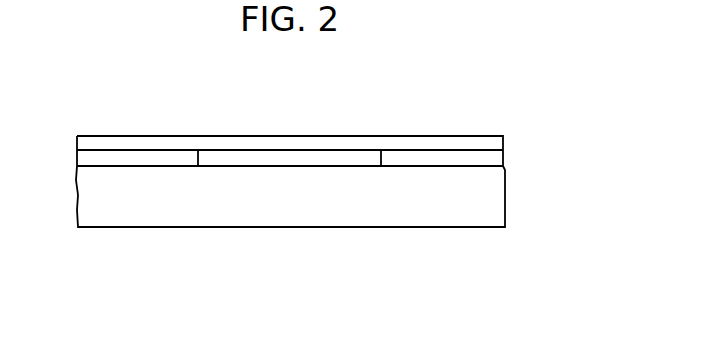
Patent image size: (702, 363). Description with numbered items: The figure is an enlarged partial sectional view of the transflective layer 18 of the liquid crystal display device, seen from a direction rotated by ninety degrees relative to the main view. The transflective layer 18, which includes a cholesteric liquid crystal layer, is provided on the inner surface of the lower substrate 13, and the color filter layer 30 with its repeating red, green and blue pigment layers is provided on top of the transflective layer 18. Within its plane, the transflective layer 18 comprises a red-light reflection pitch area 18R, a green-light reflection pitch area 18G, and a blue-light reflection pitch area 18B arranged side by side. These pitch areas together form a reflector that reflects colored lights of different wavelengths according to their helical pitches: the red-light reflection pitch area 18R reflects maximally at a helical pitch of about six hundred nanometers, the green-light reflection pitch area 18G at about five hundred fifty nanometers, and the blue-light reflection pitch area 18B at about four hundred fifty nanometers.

The lower substrate 13 is at (488, 195).
The transflective layer 18 is at (505, 156).
The red-light reflection pitch area 18R is at (107, 158).
The green-light reflection pitch area 18G is at (267, 158).
The blue-light reflection pitch area 18B is at (443, 155).
The color filter layer 30 is at (160, 135).